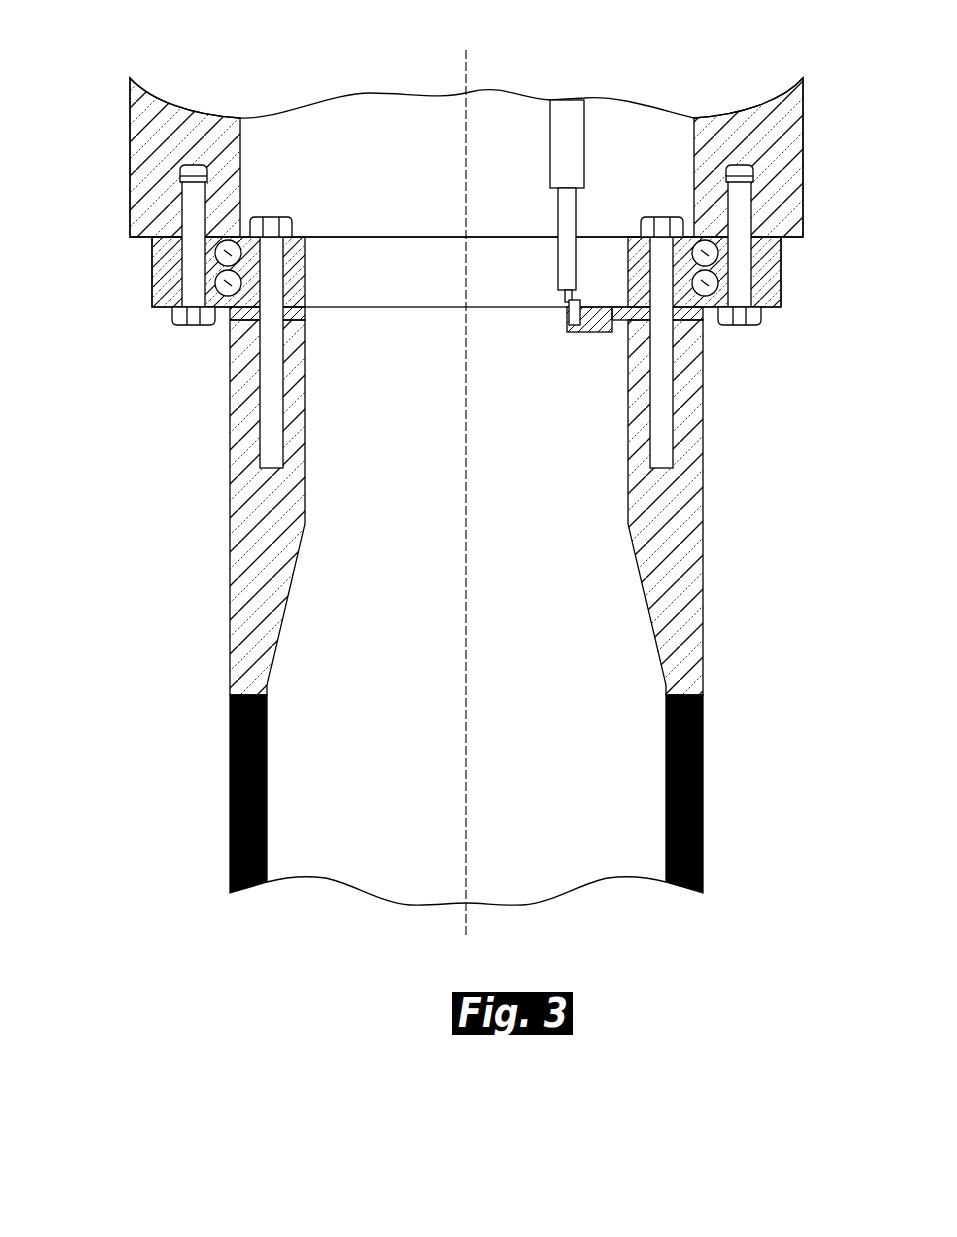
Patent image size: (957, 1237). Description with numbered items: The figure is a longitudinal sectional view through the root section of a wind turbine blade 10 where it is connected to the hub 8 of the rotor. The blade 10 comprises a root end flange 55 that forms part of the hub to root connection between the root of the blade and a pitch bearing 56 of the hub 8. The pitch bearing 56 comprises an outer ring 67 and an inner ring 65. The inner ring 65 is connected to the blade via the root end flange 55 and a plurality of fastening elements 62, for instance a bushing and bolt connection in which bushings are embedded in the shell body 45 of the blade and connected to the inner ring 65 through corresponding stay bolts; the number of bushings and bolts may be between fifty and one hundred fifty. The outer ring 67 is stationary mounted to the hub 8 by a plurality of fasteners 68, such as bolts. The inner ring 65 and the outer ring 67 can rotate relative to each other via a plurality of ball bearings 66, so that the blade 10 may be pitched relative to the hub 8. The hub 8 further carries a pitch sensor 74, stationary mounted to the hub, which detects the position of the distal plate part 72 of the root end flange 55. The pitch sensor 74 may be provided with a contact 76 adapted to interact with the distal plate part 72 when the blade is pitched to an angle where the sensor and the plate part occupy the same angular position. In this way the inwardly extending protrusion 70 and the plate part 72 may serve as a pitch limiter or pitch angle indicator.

The hub 8 is at (803, 148).
The blade 10 is at (521, 612).
The shell body 45 is at (690, 652).
The root end flange 55 is at (734, 326).
The pitch bearing 56 is at (808, 272).
The fastening elements 62 is at (660, 434).
The inner ring 65 is at (300, 291).
The ball bearings 66 is at (232, 272).
The outer ring 67 is at (162, 265).
The fasteners 68 is at (190, 326).
The inwardly extending protrusion 70 is at (626, 322).
The distal plate part 72 is at (582, 333).
The pitch sensor 74 is at (567, 113).
The contact 76 is at (564, 306).